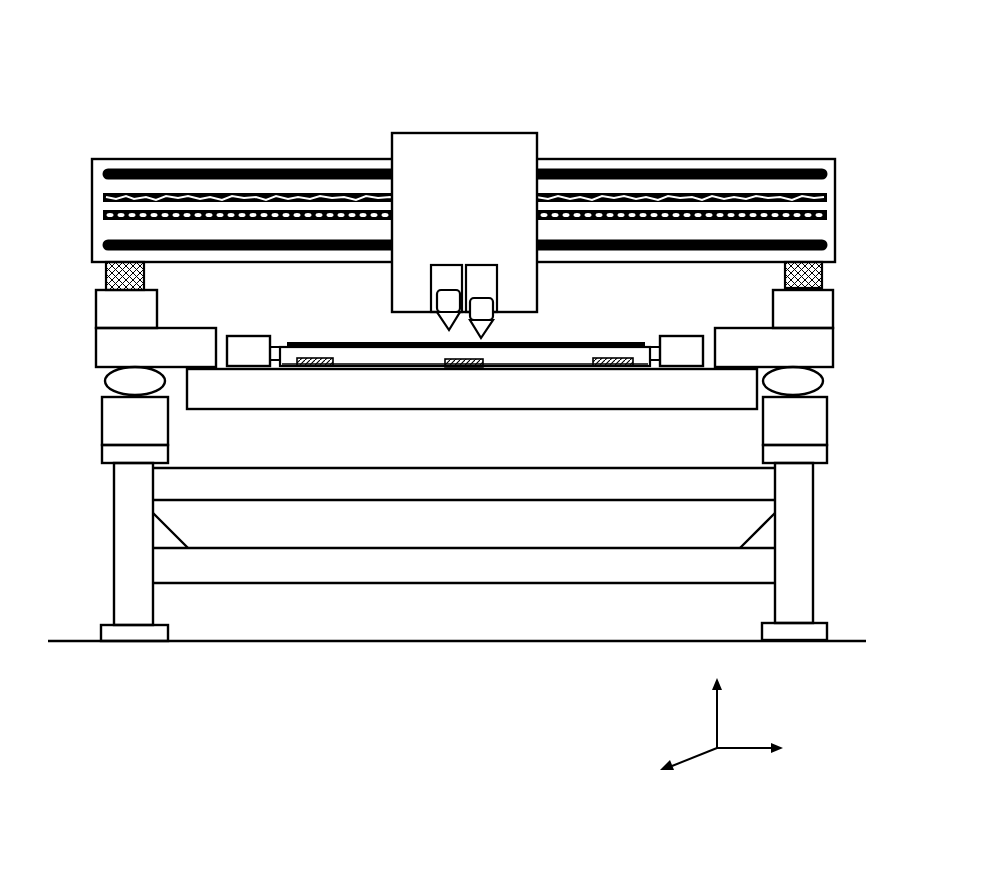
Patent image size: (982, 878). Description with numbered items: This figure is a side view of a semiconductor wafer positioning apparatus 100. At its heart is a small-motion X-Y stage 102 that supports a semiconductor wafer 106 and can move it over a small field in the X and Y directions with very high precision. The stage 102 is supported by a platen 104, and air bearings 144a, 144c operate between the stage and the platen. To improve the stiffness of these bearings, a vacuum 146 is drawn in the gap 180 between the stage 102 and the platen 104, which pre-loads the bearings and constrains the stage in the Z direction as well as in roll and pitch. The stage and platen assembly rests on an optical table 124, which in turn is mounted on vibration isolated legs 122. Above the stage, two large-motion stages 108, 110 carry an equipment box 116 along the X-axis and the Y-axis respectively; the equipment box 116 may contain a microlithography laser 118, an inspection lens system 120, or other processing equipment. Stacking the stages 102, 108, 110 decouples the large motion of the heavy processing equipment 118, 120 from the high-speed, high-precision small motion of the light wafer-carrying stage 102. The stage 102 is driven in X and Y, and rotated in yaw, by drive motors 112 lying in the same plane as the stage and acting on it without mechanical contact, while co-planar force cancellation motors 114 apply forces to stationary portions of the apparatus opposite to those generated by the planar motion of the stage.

The semiconductor wafer positioning apparatus 100 is at (243, 54).
The small-motion X-Y stage 102 is at (382, 354).
The platen 104 is at (753, 399).
The semiconductor wafer 106 is at (609, 345).
The large-motion stage 108 is at (680, 160).
The large-motion stage 110 is at (822, 277).
The drive motors 112 is at (680, 337).
The force cancellation motors 114 is at (680, 337).
The equipment box 116 is at (405, 133).
The microlithography laser 118 is at (497, 265).
The inspection lens system 120 is at (431, 265).
The vibration isolated legs 122 is at (106, 380).
The optical table 124 is at (766, 496).
The air bearing 144a is at (606, 368).
The air bearing 144c is at (311, 368).
The vacuum 146 is at (465, 369).
The gap 180 is at (372, 369).